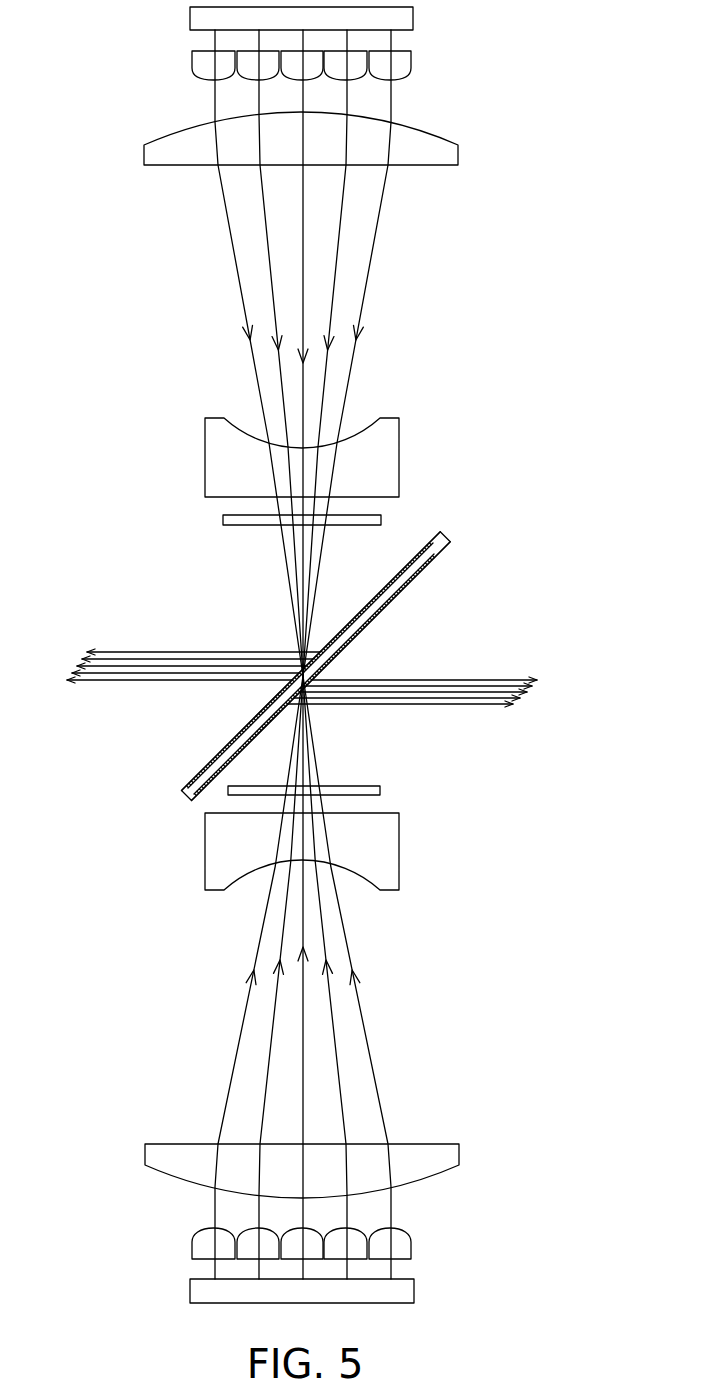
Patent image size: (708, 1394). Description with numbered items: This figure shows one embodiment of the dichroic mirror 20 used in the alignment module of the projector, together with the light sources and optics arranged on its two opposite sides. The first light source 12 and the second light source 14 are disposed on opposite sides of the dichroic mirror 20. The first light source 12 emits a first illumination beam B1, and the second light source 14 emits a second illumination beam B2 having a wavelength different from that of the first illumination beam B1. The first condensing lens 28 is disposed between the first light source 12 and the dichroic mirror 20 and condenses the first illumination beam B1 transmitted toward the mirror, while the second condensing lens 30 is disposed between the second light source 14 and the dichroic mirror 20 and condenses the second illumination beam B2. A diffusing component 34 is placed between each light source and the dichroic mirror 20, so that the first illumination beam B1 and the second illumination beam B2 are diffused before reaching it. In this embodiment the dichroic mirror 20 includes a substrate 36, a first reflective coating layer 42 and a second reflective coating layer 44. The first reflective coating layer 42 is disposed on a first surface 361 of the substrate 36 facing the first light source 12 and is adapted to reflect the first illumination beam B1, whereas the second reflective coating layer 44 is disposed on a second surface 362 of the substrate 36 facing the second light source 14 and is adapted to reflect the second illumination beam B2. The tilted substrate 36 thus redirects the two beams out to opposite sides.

The first light source 12 is at (397, 62).
The second light source 14 is at (398, 1249).
The dichroic mirror 20 is at (360, 704).
The first condensing lens 28 is at (438, 158).
The second condensing lens 30 is at (440, 1150).
The diffusing component 34 is at (373, 520).
The substrate 36 is at (178, 800).
The first surface 361 is at (185, 781).
The second surface 362 is at (197, 803).
The first reflective coating layer 42 is at (232, 743).
The second reflective coating layer 44 is at (503, 557).
The first illumination beam B1 is at (370, 242).
The second illumination beam B2 is at (372, 1067).